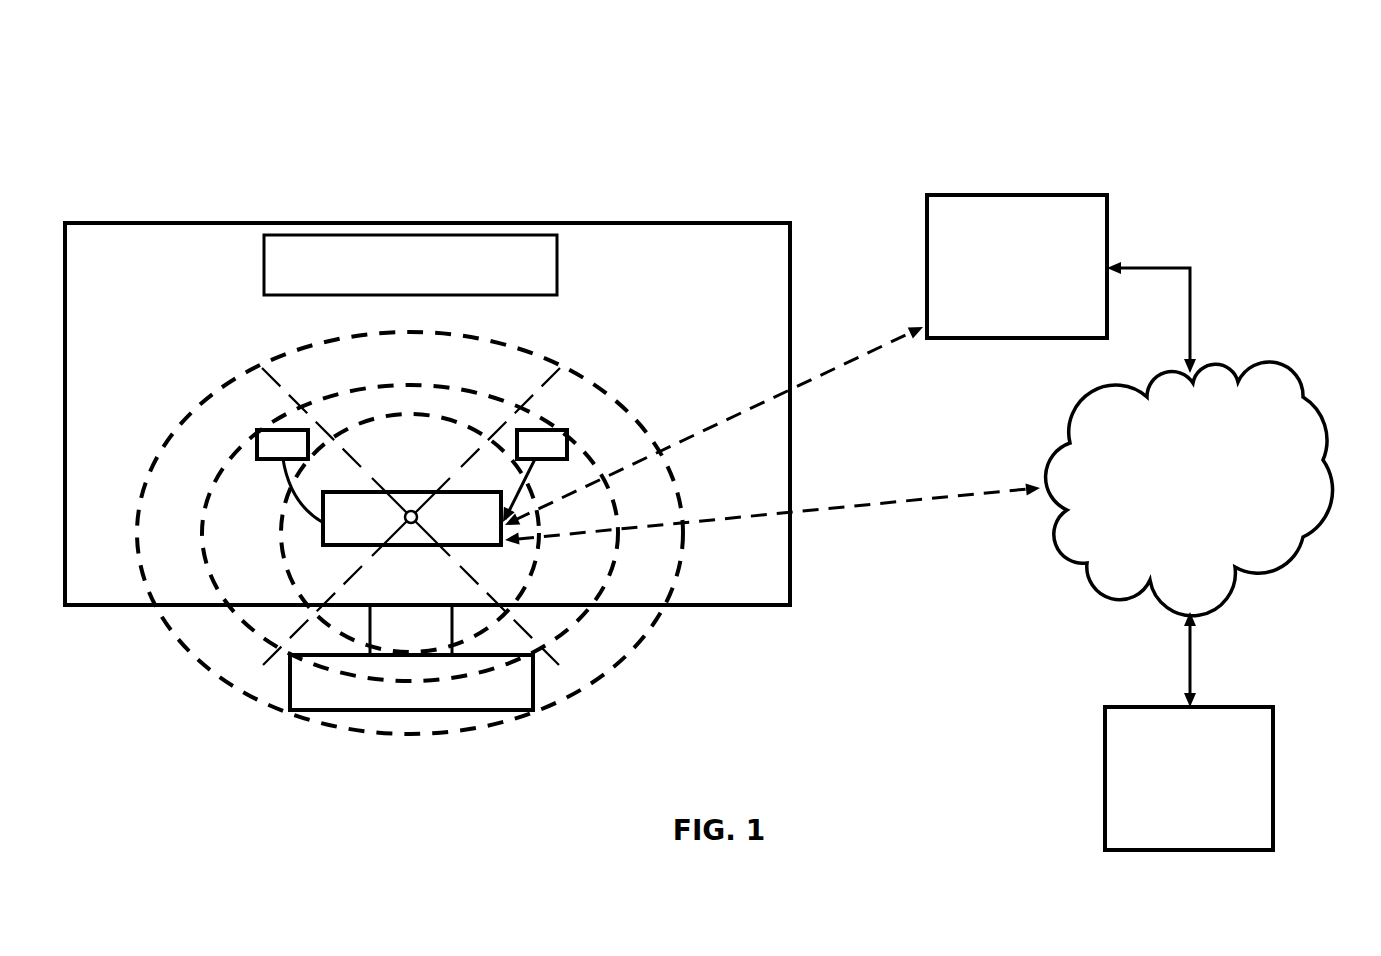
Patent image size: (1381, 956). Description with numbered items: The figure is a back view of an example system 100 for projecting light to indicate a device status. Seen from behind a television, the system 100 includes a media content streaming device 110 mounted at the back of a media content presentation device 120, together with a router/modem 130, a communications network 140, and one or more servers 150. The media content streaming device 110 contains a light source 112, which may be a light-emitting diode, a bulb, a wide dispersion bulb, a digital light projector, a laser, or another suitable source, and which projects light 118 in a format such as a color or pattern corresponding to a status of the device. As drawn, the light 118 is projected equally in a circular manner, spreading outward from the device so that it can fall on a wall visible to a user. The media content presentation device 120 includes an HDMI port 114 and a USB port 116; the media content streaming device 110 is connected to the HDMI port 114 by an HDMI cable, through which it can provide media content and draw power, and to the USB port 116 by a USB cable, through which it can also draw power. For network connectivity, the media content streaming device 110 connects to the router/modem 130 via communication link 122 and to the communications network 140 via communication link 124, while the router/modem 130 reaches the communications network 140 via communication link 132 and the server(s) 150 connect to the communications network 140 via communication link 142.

The system 100 is at (767, 73).
The media content streaming device 110 is at (408, 492).
The light source 112 is at (420, 520).
The HDMI port 114 is at (256, 444).
The USB port 116 is at (568, 446).
The light 118 is at (153, 465).
The media content presentation device 120 is at (494, 222).
The communication link 122 is at (845, 361).
The communication link 124 is at (868, 507).
The router/modem 130 is at (1058, 195).
The communication link 132 is at (1192, 298).
The communications network 140 is at (1308, 400).
The communication link 142 is at (1197, 663).
The server(s) 150 is at (1276, 731).